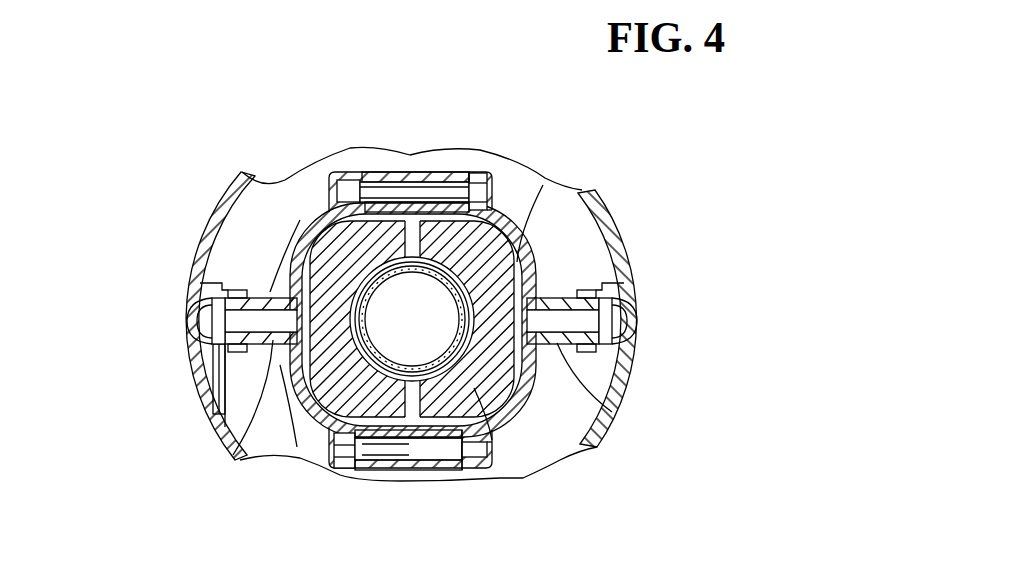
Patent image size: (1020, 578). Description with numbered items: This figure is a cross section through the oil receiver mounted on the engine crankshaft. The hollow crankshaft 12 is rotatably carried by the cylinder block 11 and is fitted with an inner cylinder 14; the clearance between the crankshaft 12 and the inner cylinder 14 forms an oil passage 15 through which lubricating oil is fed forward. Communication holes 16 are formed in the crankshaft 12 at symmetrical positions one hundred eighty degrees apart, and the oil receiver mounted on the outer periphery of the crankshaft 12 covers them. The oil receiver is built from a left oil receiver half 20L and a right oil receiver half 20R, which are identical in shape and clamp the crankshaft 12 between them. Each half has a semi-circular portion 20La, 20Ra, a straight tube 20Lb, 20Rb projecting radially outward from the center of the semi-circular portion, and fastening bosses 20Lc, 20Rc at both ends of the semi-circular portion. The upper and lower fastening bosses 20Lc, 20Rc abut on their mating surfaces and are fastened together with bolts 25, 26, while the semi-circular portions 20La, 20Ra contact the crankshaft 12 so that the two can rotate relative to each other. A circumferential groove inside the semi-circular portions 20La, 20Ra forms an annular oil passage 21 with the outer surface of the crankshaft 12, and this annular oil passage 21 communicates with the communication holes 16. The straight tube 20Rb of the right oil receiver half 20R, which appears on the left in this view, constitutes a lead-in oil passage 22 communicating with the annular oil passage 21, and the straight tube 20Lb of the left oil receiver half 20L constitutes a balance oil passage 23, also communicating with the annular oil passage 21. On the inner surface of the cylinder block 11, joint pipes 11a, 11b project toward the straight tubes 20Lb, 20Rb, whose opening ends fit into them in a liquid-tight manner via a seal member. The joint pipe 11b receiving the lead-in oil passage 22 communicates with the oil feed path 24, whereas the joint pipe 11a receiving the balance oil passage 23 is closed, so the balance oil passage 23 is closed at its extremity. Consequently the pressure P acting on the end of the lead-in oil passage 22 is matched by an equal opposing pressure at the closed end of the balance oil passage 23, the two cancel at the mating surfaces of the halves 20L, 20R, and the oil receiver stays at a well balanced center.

The cylinder block 11 is at (215, 200).
The joint pipe 11a is at (610, 277).
The joint pipe 11b is at (207, 281).
The crankshaft 12 is at (350, 252).
The inner cylinder 14 is at (366, 296).
The oil passage 15 is at (456, 298).
The communication holes 16 is at (417, 241).
The right oil receiver half 20R is at (263, 278).
The semi-circular portion 20Ra is at (293, 450).
The straight tube 20Rb is at (230, 448).
The fastening bosses 20Rc is at (373, 172).
The left oil receiver half 20L is at (550, 251).
The semi-circular portion 20La is at (543, 186).
The straight tube 20Lb is at (618, 408).
The fastening bosses 20Lc is at (443, 172).
The annular oil passage 21 is at (320, 257).
The lead-in oil passage 22 is at (259, 325).
The balance oil passage 23 is at (553, 312).
The oil feed path 24 is at (213, 372).
The bolt 25 is at (400, 183).
The bolt 26 is at (421, 460).
The pressure P is at (215, 321).